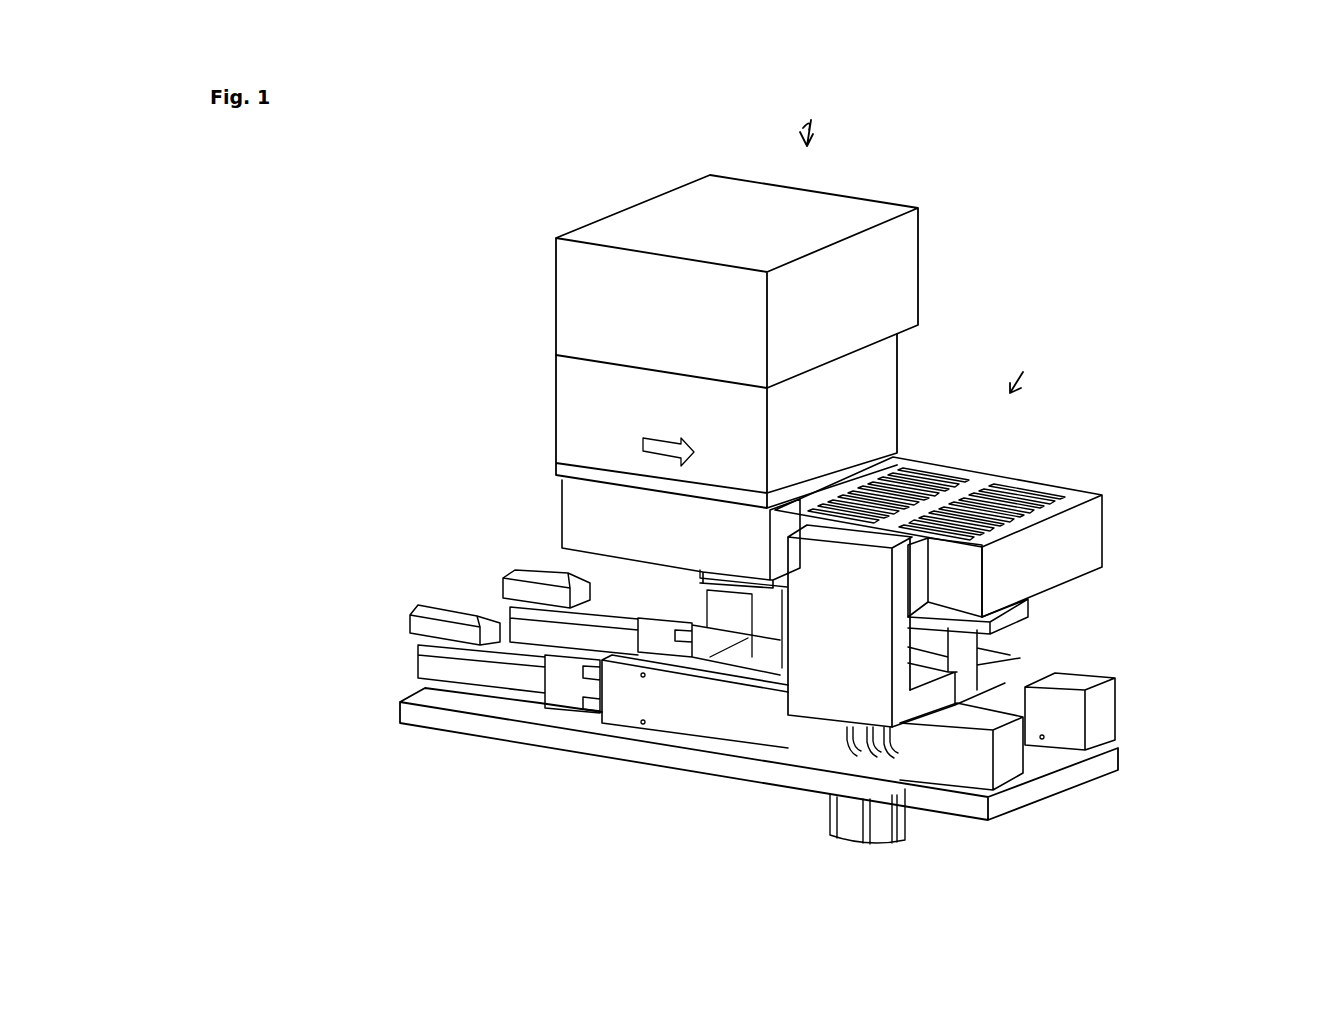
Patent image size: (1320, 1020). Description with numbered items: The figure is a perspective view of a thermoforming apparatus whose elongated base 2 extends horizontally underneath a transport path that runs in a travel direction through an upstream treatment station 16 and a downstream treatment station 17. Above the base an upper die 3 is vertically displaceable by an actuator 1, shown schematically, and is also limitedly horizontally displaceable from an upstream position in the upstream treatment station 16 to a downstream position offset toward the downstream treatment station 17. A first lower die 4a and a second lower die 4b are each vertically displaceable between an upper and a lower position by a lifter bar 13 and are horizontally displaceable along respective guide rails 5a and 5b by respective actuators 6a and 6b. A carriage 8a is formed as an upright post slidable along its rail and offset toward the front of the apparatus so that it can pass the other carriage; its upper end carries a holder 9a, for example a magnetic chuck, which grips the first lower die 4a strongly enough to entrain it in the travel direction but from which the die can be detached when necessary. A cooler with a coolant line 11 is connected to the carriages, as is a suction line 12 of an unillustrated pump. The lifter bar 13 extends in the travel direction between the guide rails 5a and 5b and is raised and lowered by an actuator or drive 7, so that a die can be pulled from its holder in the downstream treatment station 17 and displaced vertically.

The actuator 1 is at (595, 311).
The elongated base 2 is at (440, 708).
The upper die 3 is at (580, 428).
The first lower die 4a is at (565, 530).
The second lower die 4b is at (1068, 528).
The guide rail 5a is at (1003, 771).
The guide rail 5b is at (1116, 720).
The actuator 6a is at (413, 617).
The actuator 6b is at (517, 578).
The actuator or drive 7 is at (975, 703).
The carriage 8a is at (823, 685).
The holder 9a is at (918, 572).
The coolant line 11 is at (886, 747).
The suction line 12 is at (855, 733).
The lifter bar 13 is at (1007, 608).
The upstream treatment station 16 is at (820, 110).
The downstream treatment station 17 is at (1030, 359).